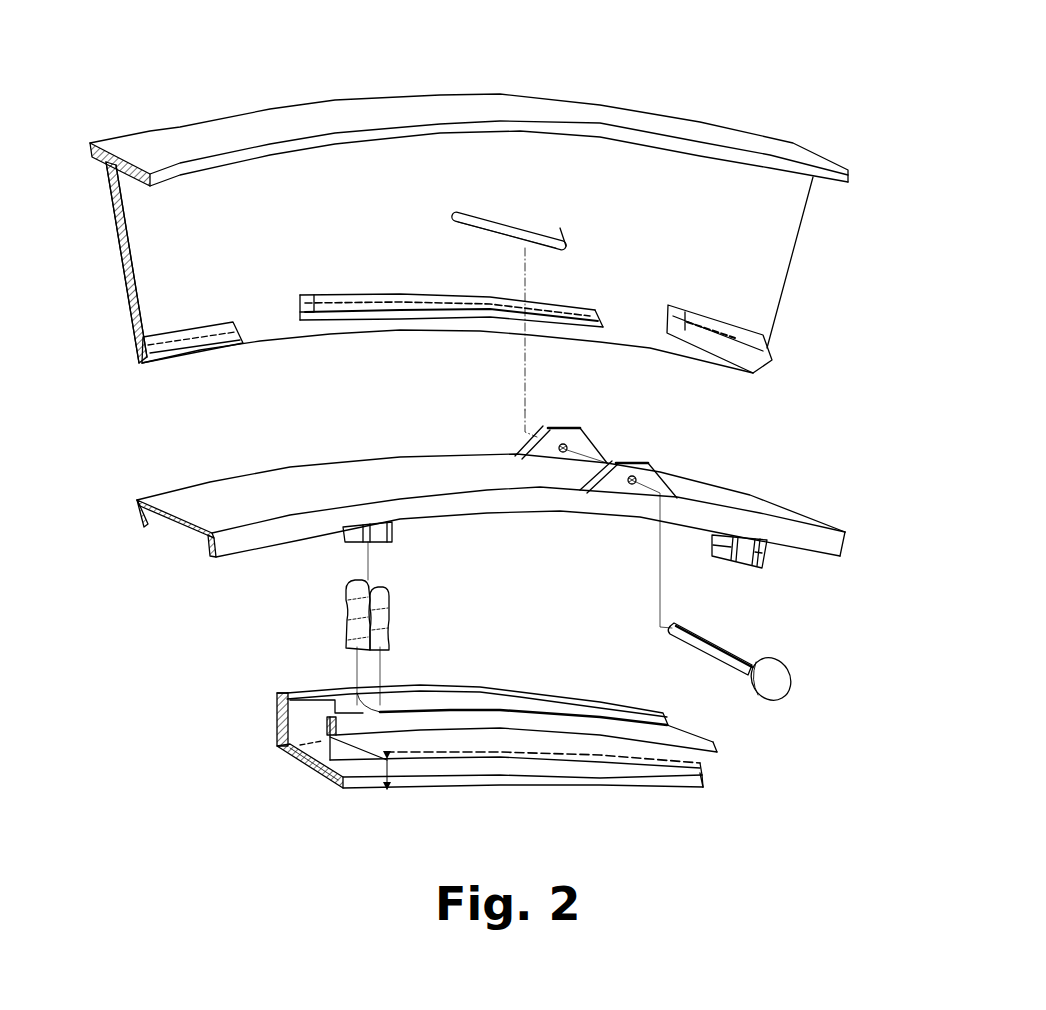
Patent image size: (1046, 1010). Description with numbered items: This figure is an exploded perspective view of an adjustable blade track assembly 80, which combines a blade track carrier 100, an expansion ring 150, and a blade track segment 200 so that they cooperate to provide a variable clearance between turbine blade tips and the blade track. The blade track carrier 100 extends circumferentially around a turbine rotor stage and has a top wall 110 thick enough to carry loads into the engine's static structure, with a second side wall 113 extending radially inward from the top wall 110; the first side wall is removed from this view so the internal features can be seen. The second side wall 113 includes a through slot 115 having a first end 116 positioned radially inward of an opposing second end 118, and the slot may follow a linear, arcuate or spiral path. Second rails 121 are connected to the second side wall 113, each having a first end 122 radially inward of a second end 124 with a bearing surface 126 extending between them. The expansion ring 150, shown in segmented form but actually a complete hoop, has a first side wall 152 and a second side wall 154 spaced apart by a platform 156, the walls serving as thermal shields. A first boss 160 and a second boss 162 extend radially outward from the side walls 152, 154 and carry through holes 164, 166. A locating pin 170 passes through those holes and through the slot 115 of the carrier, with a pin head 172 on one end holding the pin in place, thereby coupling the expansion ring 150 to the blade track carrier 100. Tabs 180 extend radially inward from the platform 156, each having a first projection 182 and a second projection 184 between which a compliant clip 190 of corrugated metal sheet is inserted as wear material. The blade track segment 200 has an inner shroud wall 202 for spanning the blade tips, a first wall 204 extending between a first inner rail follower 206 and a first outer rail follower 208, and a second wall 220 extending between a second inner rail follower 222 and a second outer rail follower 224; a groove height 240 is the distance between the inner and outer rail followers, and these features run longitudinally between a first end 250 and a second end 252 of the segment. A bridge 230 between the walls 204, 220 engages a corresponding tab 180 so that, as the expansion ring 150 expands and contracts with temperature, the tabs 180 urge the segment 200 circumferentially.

The adjustable blade track assembly 80 is at (157, 818).
The blade track carrier 100 is at (471, 226).
The top wall 110 is at (138, 145).
The second side wall 113 is at (779, 250).
The through slot 115 is at (538, 238).
The first end 116 is at (566, 244).
The second end 118 is at (452, 212).
The second rails 121 is at (163, 353).
The first end 122 is at (597, 307).
The second end 124 is at (306, 294).
The bearing surface 126 is at (438, 300).
The expansion ring 150 is at (472, 494).
The first side wall 152 is at (207, 557).
The second side wall 154 is at (140, 508).
The platform 156 is at (172, 532).
The first boss 160 is at (645, 460).
The second boss 162 is at (548, 428).
The through hole 164 is at (640, 480).
The through hole 166 is at (568, 449).
The locating pin 170 is at (759, 658).
The pin head 172 is at (793, 688).
The tabs 180 is at (391, 546).
The first projection 182 is at (714, 546).
The second projection 184 is at (760, 563).
The compliant clip 190 is at (388, 615).
The blade track segment 200 is at (505, 776).
The inner shroud wall 202 is at (494, 780).
The first wall 204 is at (705, 760).
The first inner rail follower 206 is at (702, 777).
The first outer rail follower 208 is at (716, 745).
The second wall 220 is at (280, 731).
The second inner rail follower 222 is at (283, 745).
The second outer rail follower 224 is at (283, 692).
The bridge 230 is at (398, 708).
The groove height 240 is at (396, 780).
The first end 250 is at (711, 785).
The second end 252 is at (331, 793).